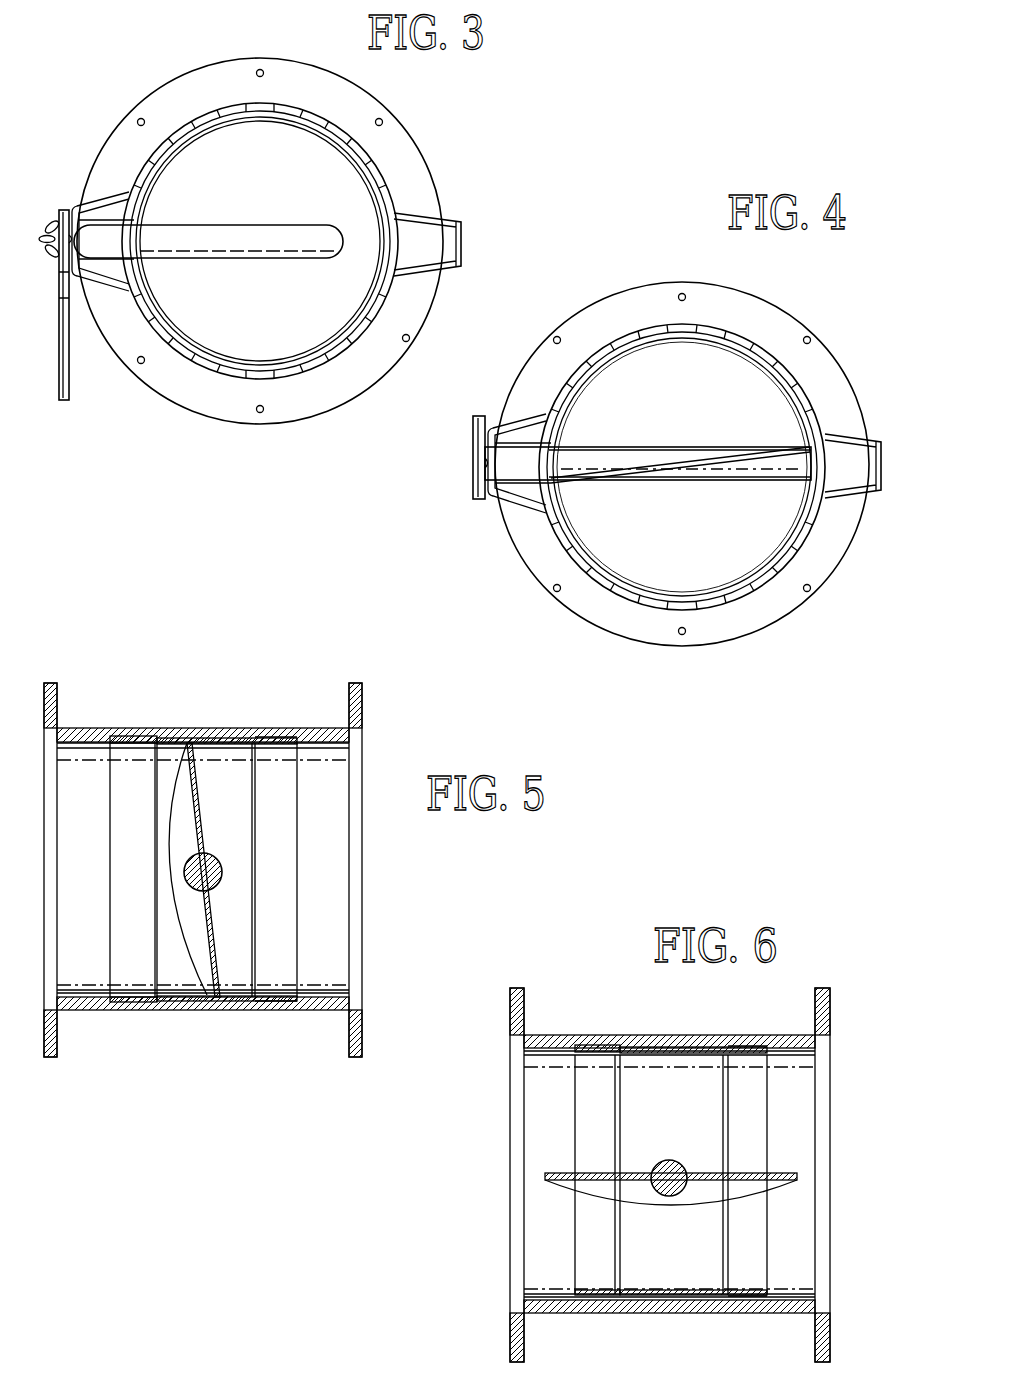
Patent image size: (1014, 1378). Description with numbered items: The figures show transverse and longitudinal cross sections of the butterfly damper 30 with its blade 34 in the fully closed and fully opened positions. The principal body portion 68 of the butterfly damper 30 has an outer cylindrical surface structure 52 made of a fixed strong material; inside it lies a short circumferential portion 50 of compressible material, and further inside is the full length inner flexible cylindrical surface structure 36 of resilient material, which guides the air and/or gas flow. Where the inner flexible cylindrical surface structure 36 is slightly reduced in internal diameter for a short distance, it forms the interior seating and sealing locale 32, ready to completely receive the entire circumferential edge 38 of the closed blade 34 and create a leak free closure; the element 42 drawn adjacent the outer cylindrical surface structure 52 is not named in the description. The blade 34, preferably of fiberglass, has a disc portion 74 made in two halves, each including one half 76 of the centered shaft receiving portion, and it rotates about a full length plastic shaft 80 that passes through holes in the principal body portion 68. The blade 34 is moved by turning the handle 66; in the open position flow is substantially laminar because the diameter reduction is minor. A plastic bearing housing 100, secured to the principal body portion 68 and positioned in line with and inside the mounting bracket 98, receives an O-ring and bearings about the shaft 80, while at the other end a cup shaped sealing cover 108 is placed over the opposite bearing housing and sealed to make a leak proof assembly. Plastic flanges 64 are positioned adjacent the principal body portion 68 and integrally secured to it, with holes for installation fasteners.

In FIG. 3, the butterfly damper 30 is at (190, 58).
In FIG. 4, the butterfly damper 30 is at (640, 275).
In FIG. 5, the butterfly damper 30 is at (93, 727).
In FIG. 6, the butterfly damper 30 is at (553, 1030).
In FIG. 5, the interior seating and sealing locale 32 is at (217, 938).
In FIG. 6, the interior seating and sealing locale 32 is at (655, 1115).
In FIG. 3, the blade 34 is at (318, 108).
In FIG. 4, the blade 34 is at (660, 477).
In FIG. 5, the blade 34 is at (200, 770).
In FIG. 6, the blade 34 is at (670, 1208).
In FIG. 3, the inner flexible cylindrical surface structure 36 is at (390, 176).
In FIG. 4, the inner flexible cylindrical surface structure 36 is at (796, 370).
In FIG. 5, the inner flexible cylindrical surface structure 36 is at (298, 828).
In FIG. 6, the inner flexible cylindrical surface structure 36 is at (767, 1118).
In FIG. 4, the circumferential edge 38 is at (588, 476).
In FIG. 5, the liner flange 42 is at (283, 745).
In FIG. 6, the liner flange 42 is at (752, 1052).
In FIG. 3, the circumferential portion of a compressible material 50 is at (380, 158).
In FIG. 4, the circumferential portion of a compressible material 50 is at (764, 346).
In FIG. 5, the circumferential portion of a compressible material 50 is at (255, 860).
In FIG. 6, the circumferential portion of a compressible material 50 is at (731, 1262).
In FIG. 3, the outer cylindrical surface structure 52 is at (365, 141).
In FIG. 4, the outer cylindrical surface structure 52 is at (748, 326).
In FIG. 5, the outer cylindrical surface structure 52 is at (278, 733).
In FIG. 6, the outer cylindrical surface structure 52 is at (742, 1033).
In FIG. 3, the flanges 64 is at (292, 52).
In FIG. 4, the flanges 64 is at (707, 275).
In FIG. 5, the flanges 64 is at (55, 683).
In FIG. 6, the flanges 64 is at (520, 988).
In FIG. 3, the handle 66 is at (66, 386).
In FIG. 4, the handle 66 is at (467, 430).
In FIG. 3, the principal body portion 68 is at (215, 375).
In FIG. 4, the principal body portion 68 is at (640, 598).
In FIG. 5, the principal body portion 68 is at (140, 730).
In FIG. 6, the principal body portion 68 is at (600, 1032).
In FIG. 3, the disc portion 74 is at (238, 175).
In FIG. 4, the disc portion 74 is at (770, 440).
In FIG. 3, the half of the centered shaft receiving portion 76 is at (228, 252).
In FIG. 4, the half of the centered shaft receiving portion 76 is at (642, 441).
In FIG. 5, the shaft 80 is at (212, 857).
In FIG. 6, the shaft 80 is at (677, 1167).
In FIG. 3, the mounting bracket 98 is at (68, 203).
In FIG. 4, the mounting bracket 98 is at (485, 414).
In FIG. 3, the bearing housing 100 is at (94, 208).
In FIG. 4, the bearing housing 100 is at (512, 430).
In FIG. 3, the sealing cover 108 is at (456, 214).
In FIG. 4, the sealing cover 108 is at (884, 431).